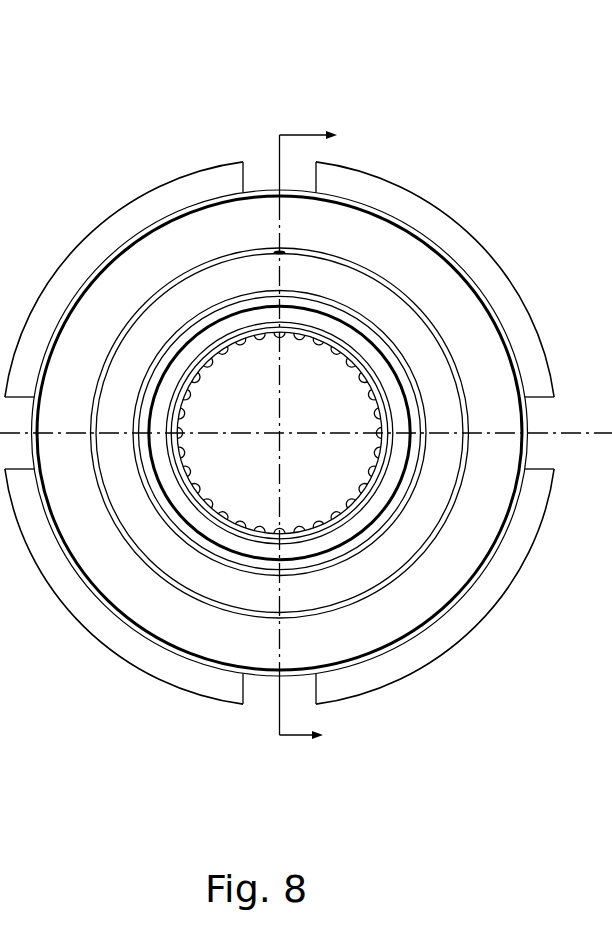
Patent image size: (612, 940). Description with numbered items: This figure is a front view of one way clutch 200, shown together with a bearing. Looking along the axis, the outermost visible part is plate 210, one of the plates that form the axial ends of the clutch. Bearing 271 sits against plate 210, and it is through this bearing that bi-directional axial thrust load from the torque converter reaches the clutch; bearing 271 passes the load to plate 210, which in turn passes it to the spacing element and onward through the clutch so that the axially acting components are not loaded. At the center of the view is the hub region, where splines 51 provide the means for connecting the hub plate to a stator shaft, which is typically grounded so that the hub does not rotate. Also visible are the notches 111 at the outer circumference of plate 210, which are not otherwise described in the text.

The one way clutch 200 is at (84, 104).
The plate 210 is at (177, 190).
The notch 111 is at (263, 168).
The bearing 271 is at (418, 265).
The splines 51 is at (193, 493).